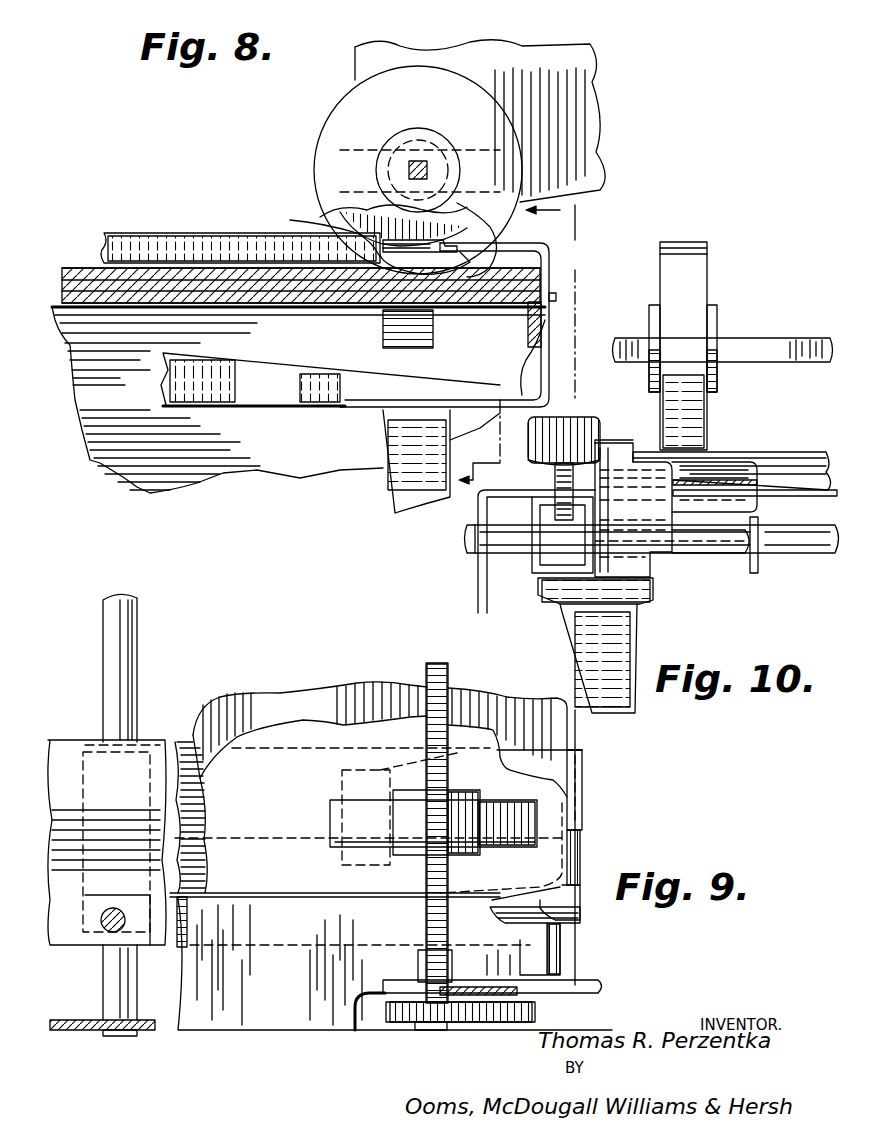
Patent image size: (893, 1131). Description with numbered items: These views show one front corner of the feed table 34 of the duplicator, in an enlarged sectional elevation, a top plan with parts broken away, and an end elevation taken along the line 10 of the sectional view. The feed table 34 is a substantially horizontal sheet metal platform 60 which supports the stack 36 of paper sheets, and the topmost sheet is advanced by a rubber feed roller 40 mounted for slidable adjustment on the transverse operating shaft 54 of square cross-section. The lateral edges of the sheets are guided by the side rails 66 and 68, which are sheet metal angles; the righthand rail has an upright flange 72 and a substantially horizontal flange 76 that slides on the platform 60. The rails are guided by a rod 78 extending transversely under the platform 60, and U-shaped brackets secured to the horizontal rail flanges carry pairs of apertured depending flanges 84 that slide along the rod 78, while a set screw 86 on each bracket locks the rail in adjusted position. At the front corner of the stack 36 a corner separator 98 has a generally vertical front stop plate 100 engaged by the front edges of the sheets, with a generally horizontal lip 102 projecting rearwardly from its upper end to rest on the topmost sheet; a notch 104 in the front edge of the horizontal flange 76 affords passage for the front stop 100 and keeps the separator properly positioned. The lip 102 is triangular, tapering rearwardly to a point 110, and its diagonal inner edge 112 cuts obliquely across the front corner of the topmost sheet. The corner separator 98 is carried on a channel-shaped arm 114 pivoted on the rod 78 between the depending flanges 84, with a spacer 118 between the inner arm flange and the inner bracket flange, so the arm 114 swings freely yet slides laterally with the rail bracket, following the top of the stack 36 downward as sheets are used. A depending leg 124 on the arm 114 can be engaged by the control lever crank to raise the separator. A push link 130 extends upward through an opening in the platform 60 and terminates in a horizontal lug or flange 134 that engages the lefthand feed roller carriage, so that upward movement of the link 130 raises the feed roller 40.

In FIG. 8, the line 10— 10 is at (527, 358).
In FIG. 8, the feed table 34 is at (100, 472).
In FIG. 9, the feed table 34 is at (190, 1035).
In FIG. 8, the stack 36 is at (280, 276).
In FIG. 10, the stack 36 is at (810, 455).
In FIG. 9, the stack 36 is at (258, 743).
In FIG. 8, the feed rollers 40 is at (325, 146).
In FIG. 10, the feed rollers 40 is at (700, 272).
In FIG. 9, the feed rollers 40 is at (327, 803).
In FIG. 8, the transverse operating shaft 54 is at (430, 165).
In FIG. 10, the transverse operating shaft 54 is at (796, 348).
In FIG. 9, the transverse operating shaft 54 is at (428, 665).
In FIG. 8, the sheet metal platform 60 is at (65, 300).
In FIG. 10, the sheet metal platform 60 is at (790, 497).
In FIG. 8, the lefthand side rail 66 is at (148, 231).
In FIG. 9, the righthand side rail 68 is at (262, 903).
In FIG. 9, the upright flange 72 is at (280, 893).
In FIG. 9, the horizontal flange 76 is at (582, 766).
In FIG. 10, the rod 78 is at (816, 556).
In FIG. 9, the rod 78 is at (130, 658).
In FIG. 10, the depending lugs or flanges 84 is at (533, 575).
In FIG. 9, the depending lugs or flanges 84 is at (95, 744).
In FIG. 10, the set screw 86 is at (596, 418).
In FIG. 9, the set screw 86 is at (104, 930).
In FIG. 8, the corner separator 98 is at (556, 268).
In FIG. 10, the corner separator 98 is at (625, 442).
In FIG. 9, the corner separator 98 is at (582, 878).
In FIG. 8, the front stop plate 100 is at (545, 296).
In FIG. 10, the front stop plate 100 is at (690, 432).
In FIG. 8, the lip 102 is at (496, 268).
In FIG. 9, the lip 102 is at (566, 948).
In FIG. 9, the notch 104 is at (580, 840).
In FIG. 9, the point 110 is at (496, 906).
In FIG. 9, the diagonal inner edge 112 is at (512, 912).
In FIG. 8, the arm 114 is at (320, 420).
In FIG. 10, the arm 114 is at (552, 598).
In FIG. 10, the spacer 118 is at (712, 568).
In FIG. 10, the depending flange or leg 124 is at (625, 670).
In FIG. 8, the push link 130 is at (408, 357).
In FIG. 8, the horizontal lug or flange 134 is at (380, 244).